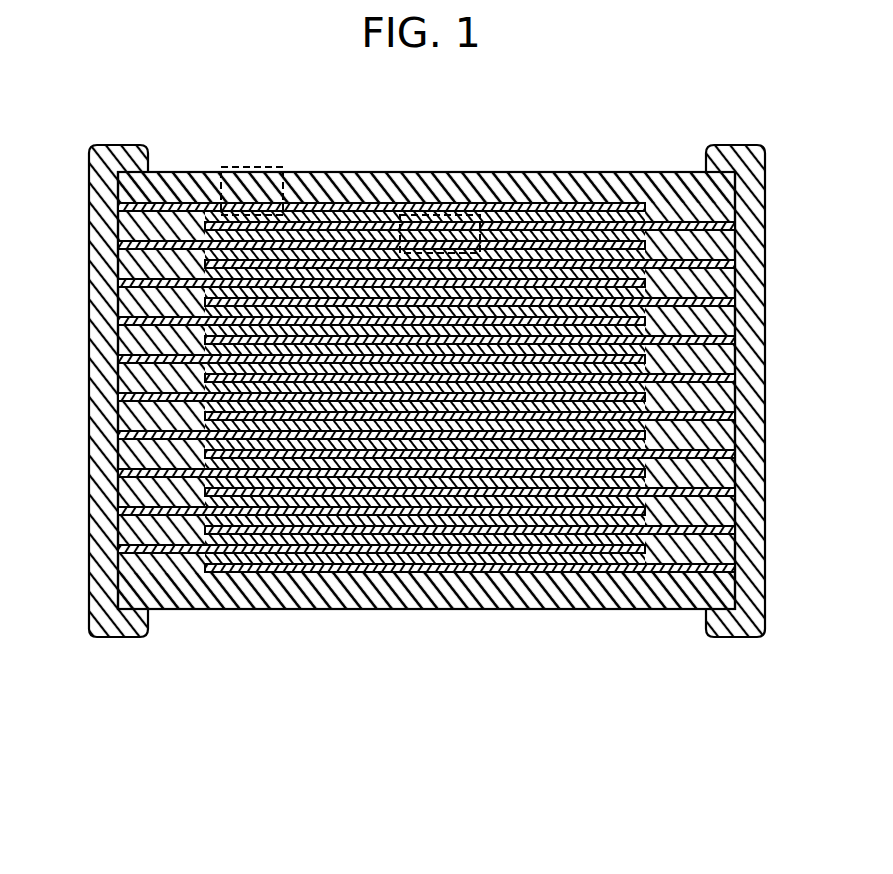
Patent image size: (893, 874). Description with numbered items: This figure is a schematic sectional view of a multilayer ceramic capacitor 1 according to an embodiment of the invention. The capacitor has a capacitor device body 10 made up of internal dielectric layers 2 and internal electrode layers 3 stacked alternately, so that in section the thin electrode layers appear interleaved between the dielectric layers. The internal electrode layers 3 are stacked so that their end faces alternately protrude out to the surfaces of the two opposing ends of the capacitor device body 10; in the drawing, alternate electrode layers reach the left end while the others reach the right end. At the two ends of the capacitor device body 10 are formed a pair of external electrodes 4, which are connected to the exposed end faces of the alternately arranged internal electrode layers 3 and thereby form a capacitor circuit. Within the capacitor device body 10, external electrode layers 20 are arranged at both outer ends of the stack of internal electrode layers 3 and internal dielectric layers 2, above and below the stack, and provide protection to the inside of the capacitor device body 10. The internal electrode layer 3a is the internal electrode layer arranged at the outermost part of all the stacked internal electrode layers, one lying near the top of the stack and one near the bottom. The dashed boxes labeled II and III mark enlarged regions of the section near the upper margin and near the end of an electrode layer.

The multilayer ceramic capacitor 1 is at (427, 418).
The internal dielectric layer 2 is at (330, 222).
The internal electrode layer 3 is at (655, 275).
The outermost internal electrode layer 3a is at (514, 209).
The external electrode 4 is at (735, 150).
The capacitor device body 10 is at (426, 398).
The external electrode layer 20 is at (588, 190).
The region shown in FIG. 2 II is at (427, 214).
The region shown in FIG. 3 III is at (253, 166).